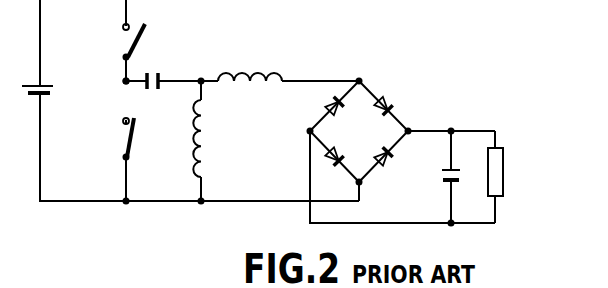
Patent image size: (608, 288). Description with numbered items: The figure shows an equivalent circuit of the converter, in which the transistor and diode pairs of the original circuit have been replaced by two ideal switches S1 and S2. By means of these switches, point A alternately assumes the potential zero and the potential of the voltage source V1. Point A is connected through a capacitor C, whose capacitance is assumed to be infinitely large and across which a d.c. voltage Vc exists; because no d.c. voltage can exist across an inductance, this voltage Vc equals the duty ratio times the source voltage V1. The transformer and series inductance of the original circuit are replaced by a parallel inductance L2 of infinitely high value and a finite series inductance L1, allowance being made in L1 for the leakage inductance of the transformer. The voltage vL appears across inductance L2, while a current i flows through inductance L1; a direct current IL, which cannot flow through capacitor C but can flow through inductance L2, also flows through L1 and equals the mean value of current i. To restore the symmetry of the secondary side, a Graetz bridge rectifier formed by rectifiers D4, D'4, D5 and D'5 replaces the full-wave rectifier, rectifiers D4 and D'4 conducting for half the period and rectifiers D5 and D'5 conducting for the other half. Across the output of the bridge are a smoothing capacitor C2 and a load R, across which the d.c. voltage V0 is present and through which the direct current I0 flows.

The voltage source V1 is at (14, 58).
The first ideal switch S1 is at (124, 40).
The second ideal switch S2 is at (117, 137).
The point A is at (123, 83).
The capacitor C is at (147, 87).
The d.c. voltage across capacitor Vc is at (179, 67).
The series inductance L1 is at (245, 73).
The parallel inductance L2 is at (208, 158).
The direct current IL is at (208, 138).
The voltage across inductance L2 vL is at (181, 109).
The current through inductance L1 i is at (283, 91).
The rectifier D5 is at (327, 104).
The rectifier D4 is at (391, 99).
The rectifier D'4 is at (341, 147).
The rectifier D'5 is at (395, 170).
The smoothing capacitor C2 is at (439, 166).
The load R is at (500, 180).
The direct current I0 is at (508, 132).
The d.c. voltage V0 is at (519, 211).